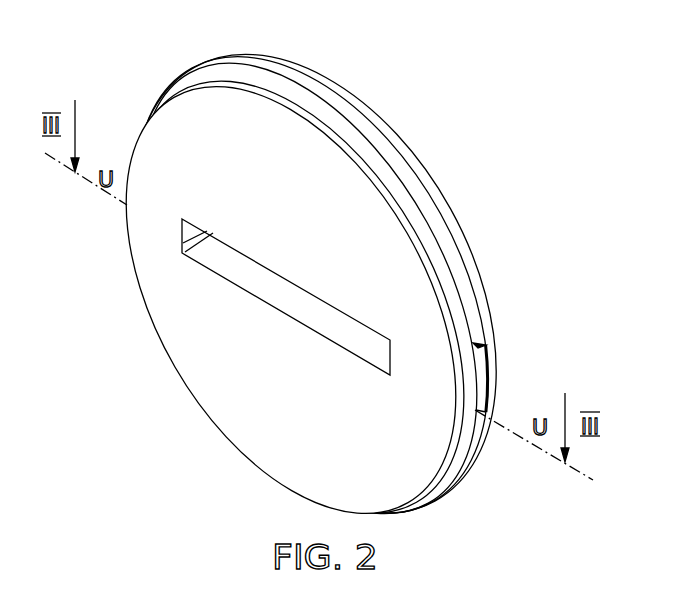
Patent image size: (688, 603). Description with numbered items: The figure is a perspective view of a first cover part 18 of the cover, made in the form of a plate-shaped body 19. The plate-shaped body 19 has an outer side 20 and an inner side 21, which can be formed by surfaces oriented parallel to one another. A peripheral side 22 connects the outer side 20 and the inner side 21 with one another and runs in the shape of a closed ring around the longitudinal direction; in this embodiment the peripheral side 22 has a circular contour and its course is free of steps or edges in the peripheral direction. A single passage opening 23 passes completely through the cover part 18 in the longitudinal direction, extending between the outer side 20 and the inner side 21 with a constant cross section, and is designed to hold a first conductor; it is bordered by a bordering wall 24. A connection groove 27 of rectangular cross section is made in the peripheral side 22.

The cover part 18 is at (488, 82).
The plate-shaped body 19 is at (168, 358).
The outer side 20 is at (466, 226).
The inner side 21 is at (254, 430).
The peripheral side 22 is at (482, 344).
The passage opening 23 is at (217, 257).
The bordering wall 24 is at (300, 299).
The connection groove 27 is at (353, 136).